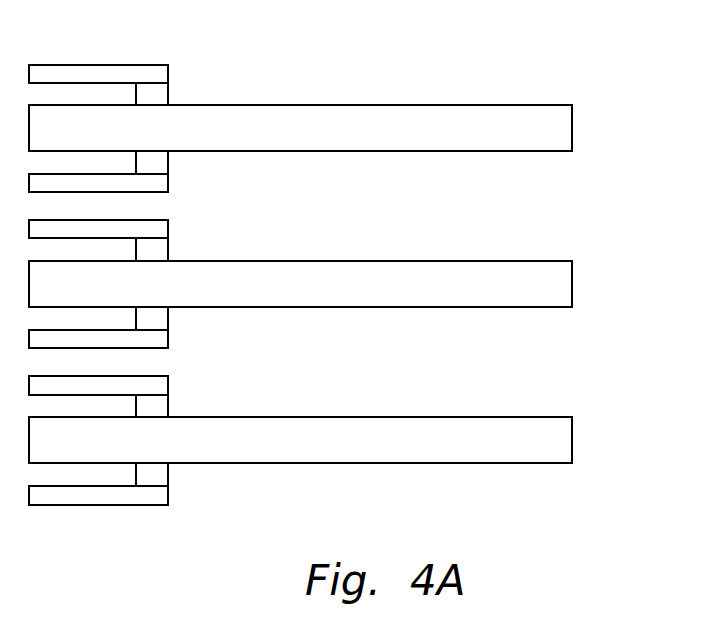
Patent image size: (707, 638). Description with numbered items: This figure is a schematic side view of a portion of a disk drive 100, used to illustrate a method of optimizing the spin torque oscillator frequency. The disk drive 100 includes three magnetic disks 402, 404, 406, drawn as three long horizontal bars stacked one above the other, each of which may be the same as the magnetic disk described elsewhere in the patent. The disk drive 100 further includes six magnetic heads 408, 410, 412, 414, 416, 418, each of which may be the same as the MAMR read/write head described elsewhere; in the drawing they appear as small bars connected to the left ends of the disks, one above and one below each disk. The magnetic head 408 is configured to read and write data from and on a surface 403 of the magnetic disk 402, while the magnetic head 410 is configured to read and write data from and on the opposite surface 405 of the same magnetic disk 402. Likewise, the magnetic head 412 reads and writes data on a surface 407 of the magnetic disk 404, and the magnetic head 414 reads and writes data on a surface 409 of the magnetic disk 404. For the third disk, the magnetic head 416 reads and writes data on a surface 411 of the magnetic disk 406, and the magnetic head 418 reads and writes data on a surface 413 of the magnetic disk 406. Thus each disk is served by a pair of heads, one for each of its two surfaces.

The disk drive 100 is at (567, 57).
The magnetic disk 402 is at (572, 130).
The surface of the magnetic disk 403 is at (403, 106).
The magnetic disk 404 is at (572, 280).
The surface of the magnetic disk 405 is at (463, 151).
The magnetic disk 406 is at (572, 442).
The surface of the magnetic disk 407 is at (402, 261).
The magnetic head 408 is at (168, 89).
The surface of the magnetic disk 409 is at (462, 307).
The magnetic head 410 is at (168, 165).
The surface of the magnetic disk 411 is at (401, 417).
The magnetic head 412 is at (168, 245).
The surface of the magnetic disk 413 is at (462, 463).
The magnetic head 414 is at (168, 320).
The magnetic head 416 is at (168, 400).
The magnetic head 418 is at (168, 477).